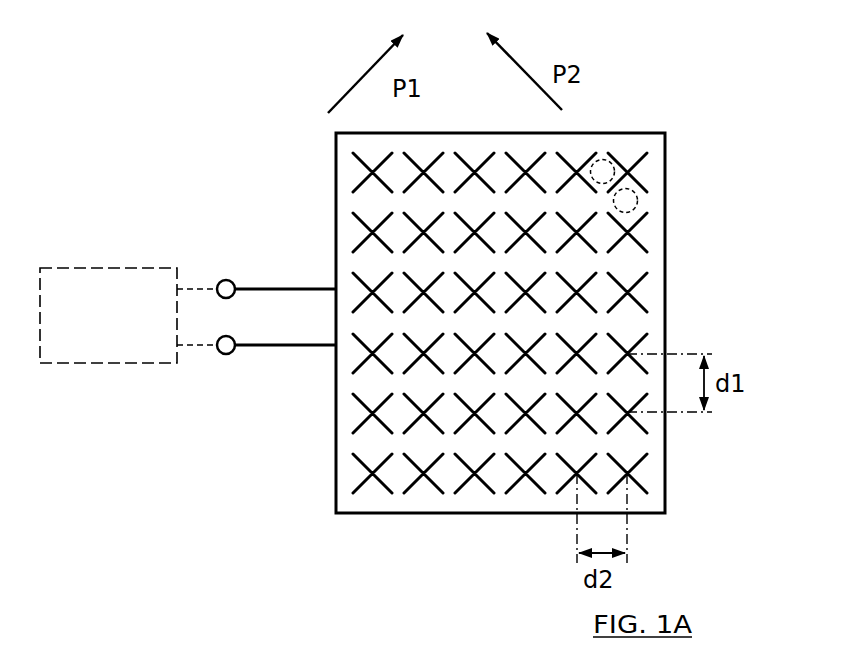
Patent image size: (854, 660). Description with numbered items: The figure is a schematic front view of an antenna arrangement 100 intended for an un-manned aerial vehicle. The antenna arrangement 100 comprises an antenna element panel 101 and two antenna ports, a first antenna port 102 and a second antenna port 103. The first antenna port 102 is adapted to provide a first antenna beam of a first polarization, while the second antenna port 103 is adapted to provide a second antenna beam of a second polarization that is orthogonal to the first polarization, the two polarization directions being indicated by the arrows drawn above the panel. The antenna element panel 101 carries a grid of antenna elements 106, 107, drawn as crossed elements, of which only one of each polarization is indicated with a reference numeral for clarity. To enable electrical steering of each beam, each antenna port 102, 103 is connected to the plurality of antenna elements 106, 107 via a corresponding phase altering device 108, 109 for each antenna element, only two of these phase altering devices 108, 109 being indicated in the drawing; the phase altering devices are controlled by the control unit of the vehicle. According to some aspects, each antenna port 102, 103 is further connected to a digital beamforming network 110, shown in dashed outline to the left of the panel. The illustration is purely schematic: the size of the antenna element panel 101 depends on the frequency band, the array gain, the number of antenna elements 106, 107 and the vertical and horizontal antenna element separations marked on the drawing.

The antenna arrangement 100 is at (245, 75).
The antenna element panel 101 is at (336, 443).
The first antenna port 102 is at (226, 280).
The second antenna port 103 is at (222, 353).
The antenna element 106 is at (643, 155).
The antenna element 107 is at (613, 158).
The phase altering device 108 is at (602, 159).
The phase altering device 109 is at (638, 197).
The digital beamforming network 110 is at (128, 329).